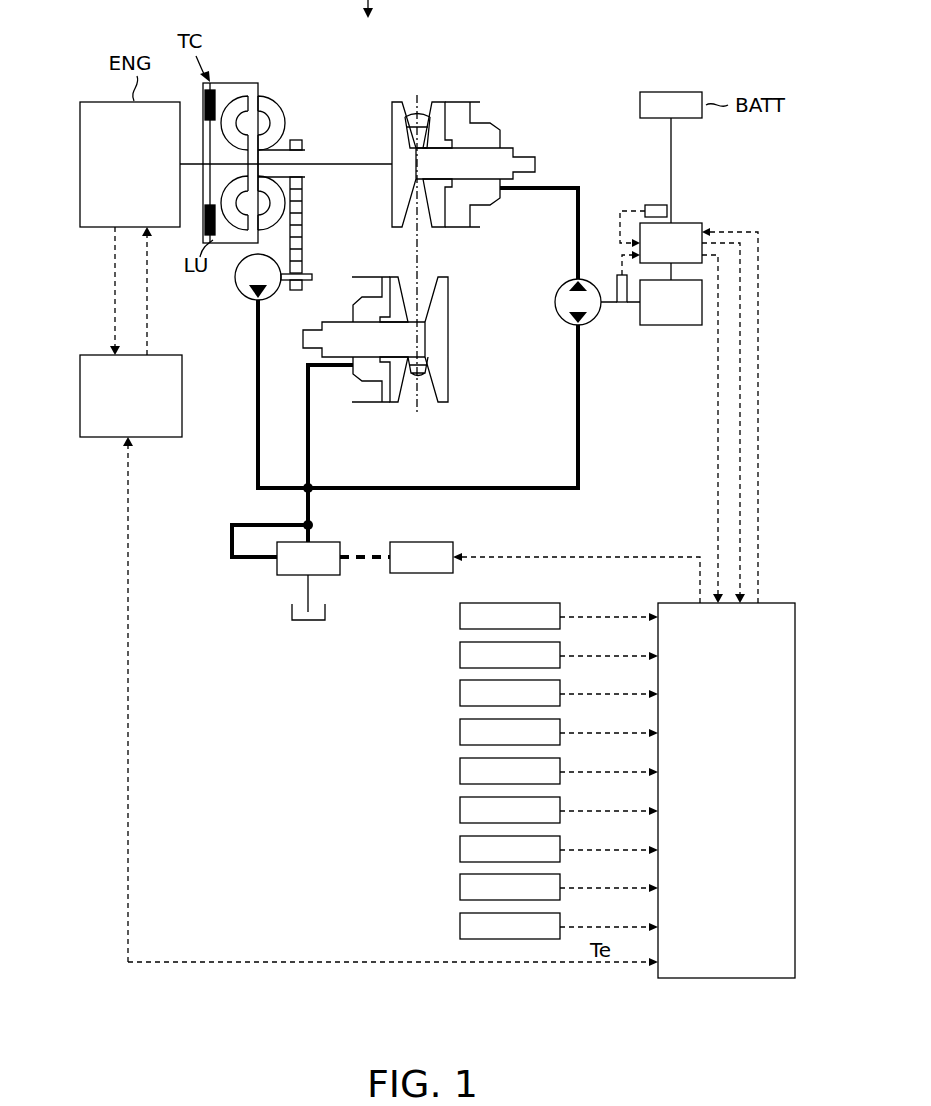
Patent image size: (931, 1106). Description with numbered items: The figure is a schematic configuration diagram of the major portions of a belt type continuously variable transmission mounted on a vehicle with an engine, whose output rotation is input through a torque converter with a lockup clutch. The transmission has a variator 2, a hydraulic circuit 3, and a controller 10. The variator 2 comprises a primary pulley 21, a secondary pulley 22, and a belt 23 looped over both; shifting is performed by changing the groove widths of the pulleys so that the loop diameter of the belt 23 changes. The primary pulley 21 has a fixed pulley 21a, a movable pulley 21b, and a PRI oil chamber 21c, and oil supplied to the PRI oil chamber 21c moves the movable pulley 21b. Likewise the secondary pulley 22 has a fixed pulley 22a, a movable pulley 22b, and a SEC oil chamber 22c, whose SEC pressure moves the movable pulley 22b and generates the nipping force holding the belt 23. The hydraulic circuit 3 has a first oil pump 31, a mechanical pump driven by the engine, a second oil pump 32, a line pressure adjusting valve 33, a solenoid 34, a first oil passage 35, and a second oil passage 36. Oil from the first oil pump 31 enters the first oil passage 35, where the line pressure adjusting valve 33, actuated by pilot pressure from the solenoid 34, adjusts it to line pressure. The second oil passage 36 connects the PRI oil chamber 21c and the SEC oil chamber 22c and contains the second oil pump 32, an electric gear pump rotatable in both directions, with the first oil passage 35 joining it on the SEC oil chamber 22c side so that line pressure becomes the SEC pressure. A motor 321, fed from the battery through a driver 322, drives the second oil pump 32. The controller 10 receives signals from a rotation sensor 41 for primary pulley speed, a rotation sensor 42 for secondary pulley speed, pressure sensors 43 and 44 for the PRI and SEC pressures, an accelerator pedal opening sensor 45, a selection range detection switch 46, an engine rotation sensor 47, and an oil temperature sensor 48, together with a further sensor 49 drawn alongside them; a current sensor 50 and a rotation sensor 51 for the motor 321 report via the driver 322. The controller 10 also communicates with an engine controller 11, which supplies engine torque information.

The variator 2 is at (448, 66).
The hydraulic circuit 3 is at (196, 517).
The controller 10 is at (727, 979).
The engine controller 11 is at (112, 437).
The primary pulley 21 is at (441, 135).
The fixed pulley 21a is at (392, 138).
The movable pulley 21b is at (437, 110).
The PRI oil chamber 21c is at (492, 131).
The secondary pulley 22 is at (403, 338).
The fixed pulley 22a is at (450, 368).
The movable pulley 22b is at (396, 392).
The SEC oil chamber 22c is at (365, 393).
The belt 23 is at (422, 378).
The first oil pump 31 is at (245, 297).
The second oil pump 32 is at (566, 318).
The line pressure adjusting valve 33 is at (284, 576).
The solenoid 34 is at (425, 542).
The first oil passage 35 is at (257, 406).
The second oil passage 36 is at (360, 490).
The rotation sensor 41 is at (460, 615).
The rotation sensor 42 is at (460, 654).
The pressure sensor 43 is at (460, 692).
The pressure sensor 44 is at (460, 731).
The accelerator pedal opening sensor 45 is at (460, 770).
The selection range detection switch 46 is at (460, 809).
The engine rotation sensor 47 is at (460, 848).
The oil temperature sensor 48 is at (460, 886).
The state of charge sensor 49 is at (460, 925).
The current sensor 50 is at (658, 205).
The rotation sensor 51 is at (618, 276).
The motor 321 is at (670, 326).
The driver 322 is at (697, 223).